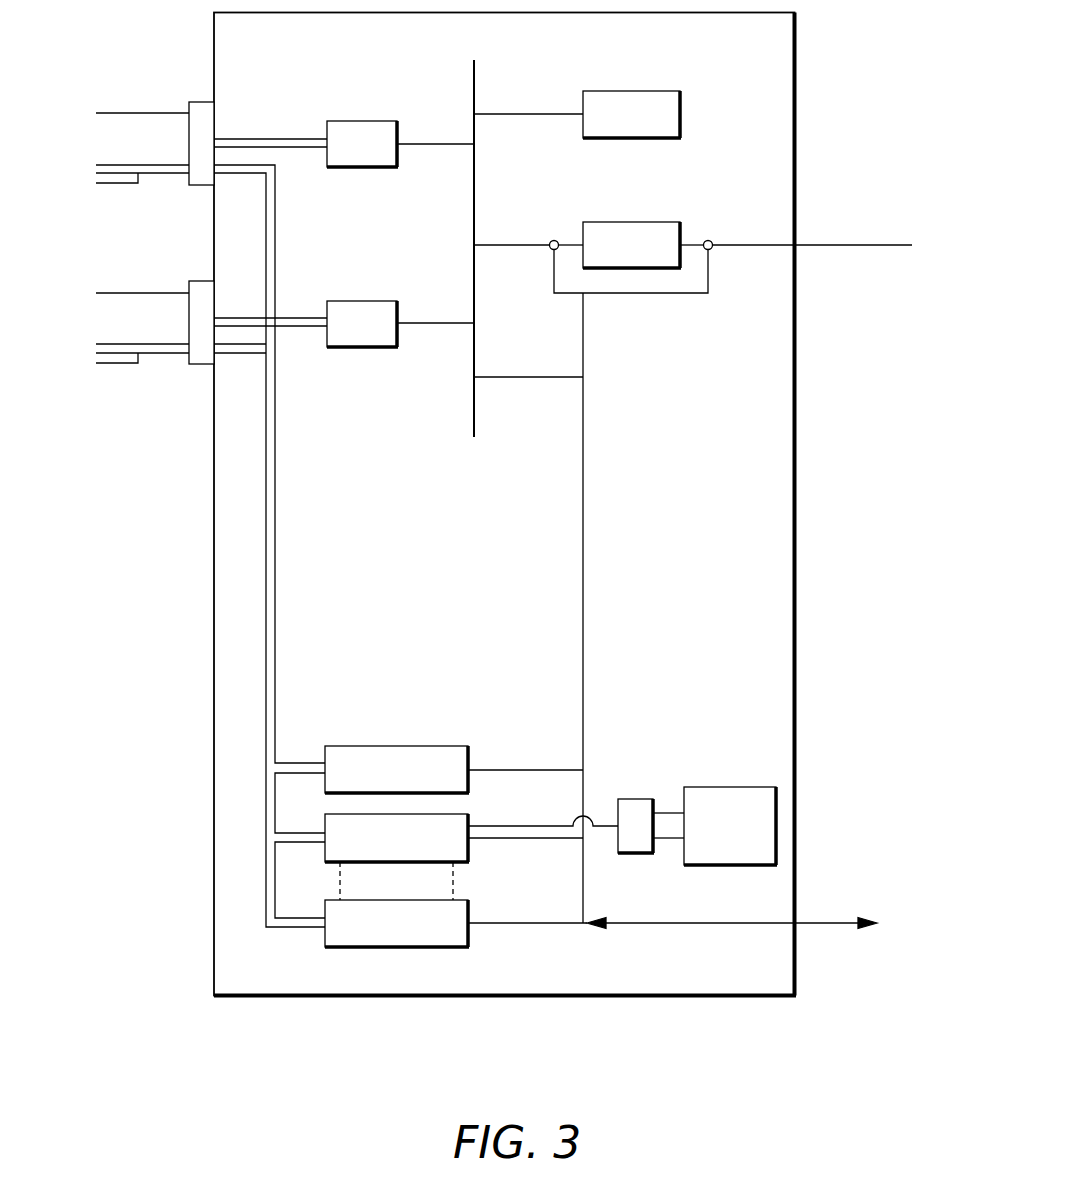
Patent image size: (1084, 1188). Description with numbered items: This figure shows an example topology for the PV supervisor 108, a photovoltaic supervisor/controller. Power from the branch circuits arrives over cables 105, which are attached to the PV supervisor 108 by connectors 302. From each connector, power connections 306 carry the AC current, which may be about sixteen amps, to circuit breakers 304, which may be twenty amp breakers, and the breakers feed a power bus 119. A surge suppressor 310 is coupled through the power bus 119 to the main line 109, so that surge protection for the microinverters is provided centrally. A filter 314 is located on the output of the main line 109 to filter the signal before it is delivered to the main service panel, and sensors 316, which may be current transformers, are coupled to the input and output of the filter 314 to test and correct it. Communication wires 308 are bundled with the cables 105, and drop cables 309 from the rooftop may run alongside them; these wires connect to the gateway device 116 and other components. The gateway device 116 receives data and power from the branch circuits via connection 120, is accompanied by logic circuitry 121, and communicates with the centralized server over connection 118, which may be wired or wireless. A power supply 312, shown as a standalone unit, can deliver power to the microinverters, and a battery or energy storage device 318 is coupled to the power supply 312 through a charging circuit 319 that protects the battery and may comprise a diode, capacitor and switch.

The PV supervisor 108 is at (774, 51).
The connectors 302 is at (200, 102).
The cables 105 is at (137, 113).
The power connections 306 is at (250, 139).
The circuit breakers 304 is at (375, 121).
The communication wires 308 is at (158, 177).
The drop cables 309 is at (122, 185).
The power bus 119 is at (474, 70).
The surge suppressor 310 is at (680, 107).
The main line 109 is at (865, 244).
The filter 314 is at (632, 222).
The sensors 316 is at (552, 240).
The connection 120 is at (585, 475).
The logic circuitry 121 is at (468, 748).
The power supply 312 is at (468, 814).
The gateway device 116 is at (468, 900).
The charging circuit 319 is at (630, 799).
The battery or energy storage device 318 is at (708, 787).
The connection 118 is at (833, 923).